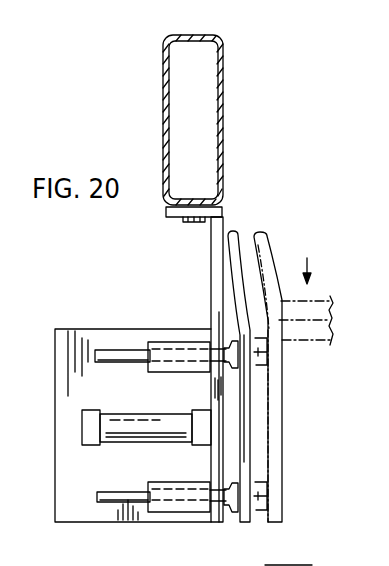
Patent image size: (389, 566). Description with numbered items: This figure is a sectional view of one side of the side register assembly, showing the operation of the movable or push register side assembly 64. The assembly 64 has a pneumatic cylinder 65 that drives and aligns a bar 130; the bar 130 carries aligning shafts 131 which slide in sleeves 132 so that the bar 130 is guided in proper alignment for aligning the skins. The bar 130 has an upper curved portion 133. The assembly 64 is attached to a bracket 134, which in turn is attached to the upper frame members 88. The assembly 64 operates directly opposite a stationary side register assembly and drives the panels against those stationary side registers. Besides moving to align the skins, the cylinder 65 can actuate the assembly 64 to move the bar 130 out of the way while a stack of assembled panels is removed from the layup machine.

The push register side assembly 64 is at (224, 122).
The upper frame members 88 is at (222, 168).
The bar 130 is at (273, 255).
The upper curved portion 133 is at (243, 238).
The bracket 134 is at (211, 242).
The aligning shafts 131 is at (122, 352).
The sleeves 132 is at (190, 345).
The pneumatic cylinder 65 is at (147, 425).